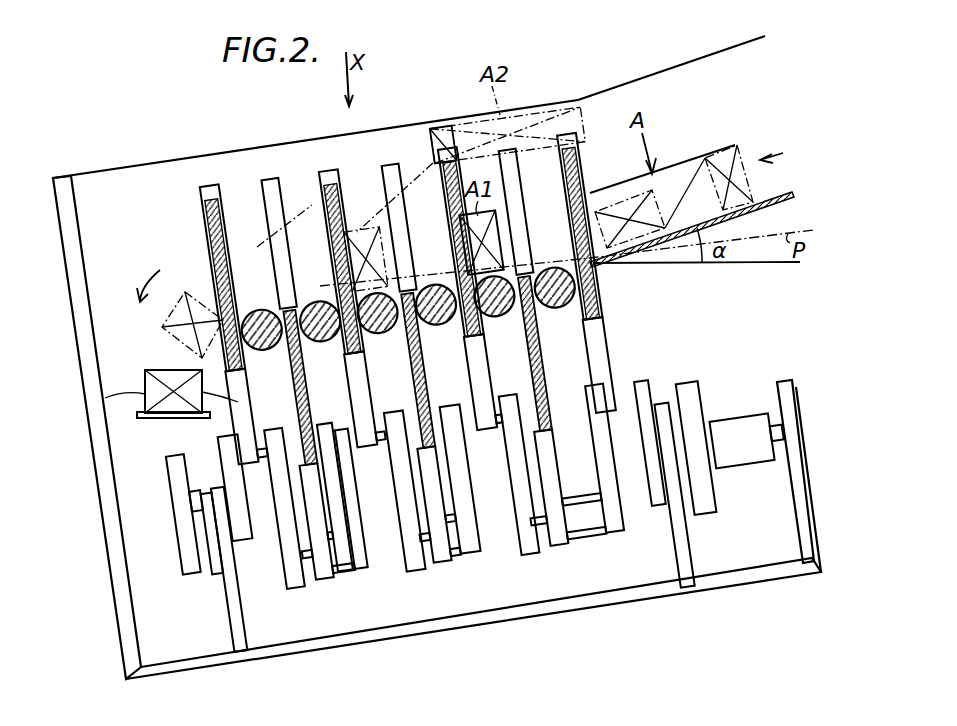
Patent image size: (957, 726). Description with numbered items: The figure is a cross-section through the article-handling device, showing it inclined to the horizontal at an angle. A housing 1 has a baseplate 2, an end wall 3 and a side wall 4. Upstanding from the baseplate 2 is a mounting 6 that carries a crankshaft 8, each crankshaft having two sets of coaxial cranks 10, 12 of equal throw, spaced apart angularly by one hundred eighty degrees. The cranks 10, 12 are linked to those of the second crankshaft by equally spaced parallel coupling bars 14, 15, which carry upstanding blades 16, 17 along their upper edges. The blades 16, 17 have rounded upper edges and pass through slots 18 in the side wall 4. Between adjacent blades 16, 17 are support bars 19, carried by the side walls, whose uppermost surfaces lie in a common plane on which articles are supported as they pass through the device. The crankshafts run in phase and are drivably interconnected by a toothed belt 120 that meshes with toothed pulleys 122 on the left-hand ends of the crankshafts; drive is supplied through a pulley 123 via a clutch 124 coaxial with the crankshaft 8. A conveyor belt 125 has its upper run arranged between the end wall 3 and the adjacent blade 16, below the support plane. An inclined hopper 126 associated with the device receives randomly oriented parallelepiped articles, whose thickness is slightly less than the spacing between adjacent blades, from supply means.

The housing 1 is at (125, 664).
The baseplate 2 is at (413, 638).
The end wall 3 is at (62, 188).
The side wall 4 is at (92, 184).
The upstanding mounting 6 is at (247, 630).
The crankshaft 8 is at (250, 548).
The crank 10 is at (255, 470).
The crank 12 is at (346, 578).
The coupling bar 14 is at (238, 385).
The coupling bar 15 is at (344, 535).
The blade 16 is at (205, 226).
The blade 17 is at (298, 395).
The slot 18 is at (268, 178).
The support bar 19 is at (308, 298).
The toothed belt 120 is at (208, 590).
The toothed pulley 122 is at (178, 491).
The pulley 123 is at (696, 388).
The clutch 124 is at (736, 424).
The conveyor belt 125 is at (152, 418).
The inclined hopper 126 is at (740, 104).